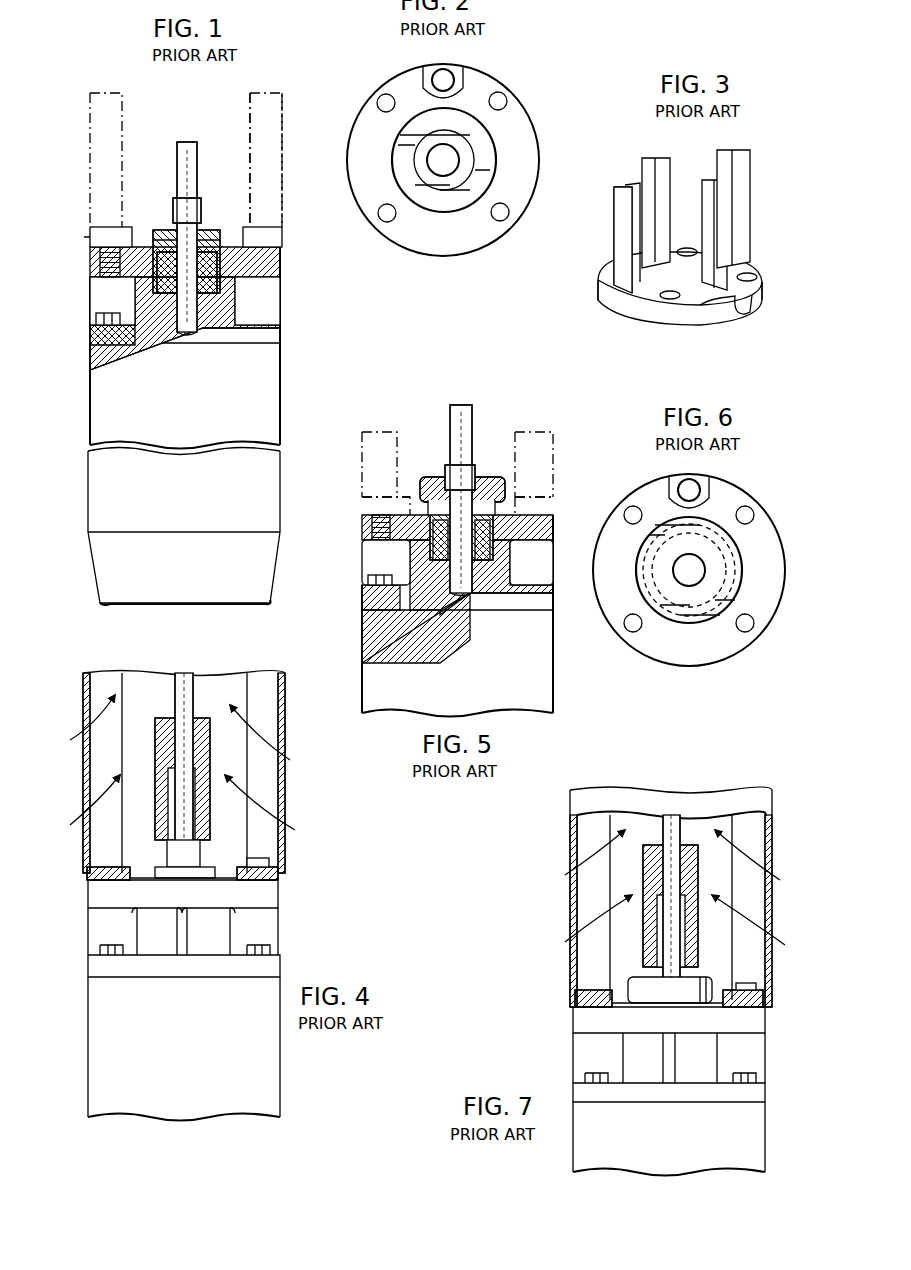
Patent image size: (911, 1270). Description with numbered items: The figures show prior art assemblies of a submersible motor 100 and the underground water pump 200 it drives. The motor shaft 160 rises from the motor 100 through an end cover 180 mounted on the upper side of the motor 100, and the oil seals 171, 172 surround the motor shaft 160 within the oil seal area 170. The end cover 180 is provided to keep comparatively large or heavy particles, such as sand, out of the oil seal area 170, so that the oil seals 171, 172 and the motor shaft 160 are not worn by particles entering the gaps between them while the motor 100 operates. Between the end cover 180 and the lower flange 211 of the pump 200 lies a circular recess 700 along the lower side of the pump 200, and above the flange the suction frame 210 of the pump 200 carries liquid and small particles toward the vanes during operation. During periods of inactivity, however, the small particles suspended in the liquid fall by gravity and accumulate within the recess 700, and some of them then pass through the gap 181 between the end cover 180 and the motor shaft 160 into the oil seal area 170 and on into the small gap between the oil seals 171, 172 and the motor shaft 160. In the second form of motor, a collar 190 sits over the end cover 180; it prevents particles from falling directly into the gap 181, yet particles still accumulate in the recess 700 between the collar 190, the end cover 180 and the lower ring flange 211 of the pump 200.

In FIG. 1, the motor 100 is at (266, 392).
In FIG. 2, the motor 100 is at (527, 113).
In FIG. 5, the motor 100 is at (540, 700).
In FIG. 6, the motor 100 is at (730, 490).
In FIG. 4, the motor 100 is at (95, 1032).
In FIG. 7, the motor 100 is at (750, 1143).
In FIG. 1, the motor shaft 160 is at (182, 142).
In FIG. 2, the motor shaft 160 is at (448, 165).
In FIG. 5, the motor shaft 160 is at (480, 405).
In FIG. 6, the motor shaft 160 is at (683, 575).
In FIG. 4, the motor shaft 160 is at (193, 690).
In FIG. 7, the motor shaft 160 is at (665, 815).
In FIG. 1, the oil seal area 170 is at (160, 232).
In FIG. 5, the oil seal area 170 is at (412, 550).
In FIG. 1, the oil seal 171 is at (230, 266).
In FIG. 5, the oil seal 171 is at (530, 520).
In FIG. 1, the oil seal 172 is at (205, 282).
In FIG. 5, the oil seal 172 is at (510, 550).
In FIG. 1, the end cover 180 is at (218, 232).
In FIG. 2, the end cover 180 is at (473, 148).
In FIG. 5, the end cover 180 is at (428, 480).
In FIG. 6, the end cover 180 is at (712, 596).
In FIG. 4, the end cover 180 is at (215, 872).
In FIG. 1, the gap 181 is at (205, 232).
In FIG. 5, the gap 181 is at (485, 480).
In FIG. 5, the collar 190 is at (432, 480).
In FIG. 6, the collar 190 is at (705, 545).
In FIG. 7, the collar 190 is at (712, 985).
In FIG. 1, the pump 200 is at (90, 157).
In FIG. 5, the pump 200 is at (533, 435).
In FIG. 4, the pump 200 is at (283, 712).
In FIG. 7, the pump 200 is at (740, 795).
In FIG. 1, the suction frame 210 is at (282, 152).
In FIG. 3, the suction frame 210 is at (750, 202).
In FIG. 1, the lower flange 211 is at (105, 240).
In FIG. 3, the lower flange 211 is at (642, 308).
In FIG. 5, the lower flange 211 is at (535, 495).
In FIG. 4, the lower flange 211 is at (240, 880).
In FIG. 7, the lower flange 211 is at (582, 1000).
In FIG. 1, the circular recess 700 is at (232, 227).
In FIG. 5, the circular recess 700 is at (408, 498).
In FIG. 4, the circular recess 700 is at (142, 868).
In FIG. 7, the circular recess 700 is at (615, 990).